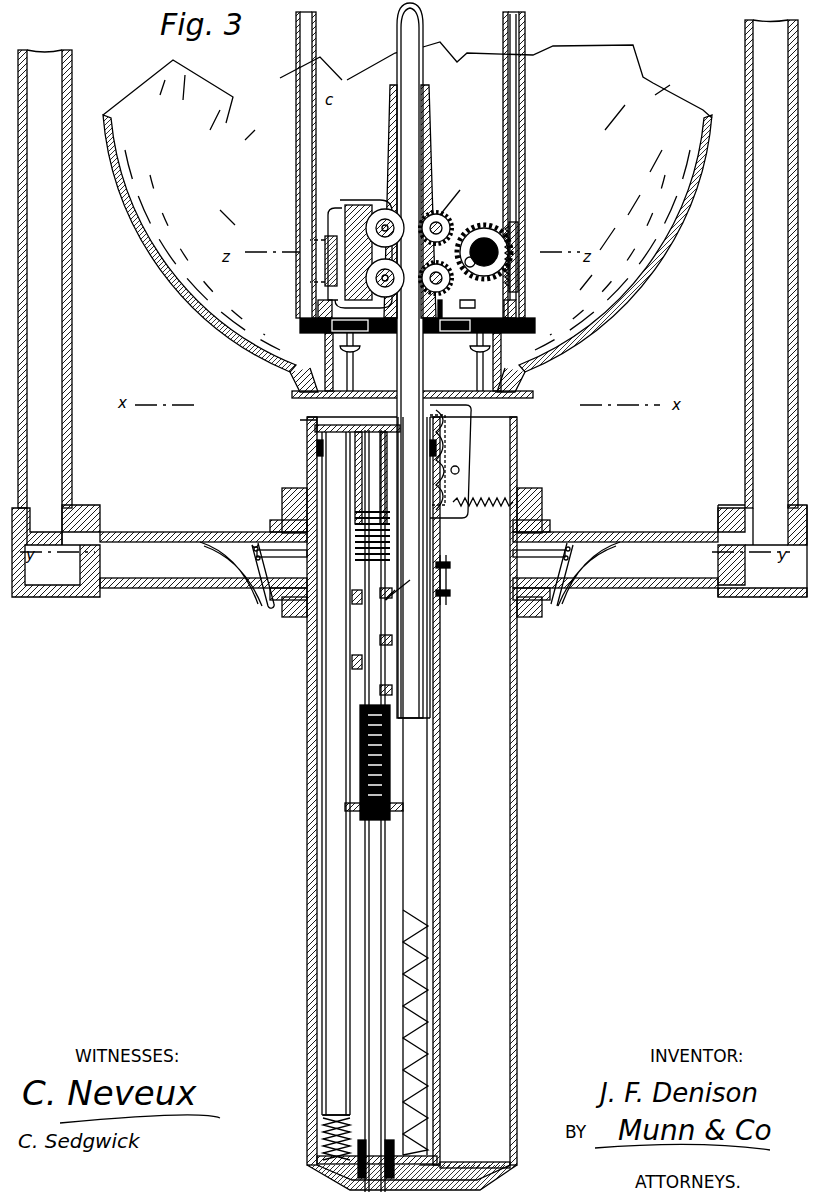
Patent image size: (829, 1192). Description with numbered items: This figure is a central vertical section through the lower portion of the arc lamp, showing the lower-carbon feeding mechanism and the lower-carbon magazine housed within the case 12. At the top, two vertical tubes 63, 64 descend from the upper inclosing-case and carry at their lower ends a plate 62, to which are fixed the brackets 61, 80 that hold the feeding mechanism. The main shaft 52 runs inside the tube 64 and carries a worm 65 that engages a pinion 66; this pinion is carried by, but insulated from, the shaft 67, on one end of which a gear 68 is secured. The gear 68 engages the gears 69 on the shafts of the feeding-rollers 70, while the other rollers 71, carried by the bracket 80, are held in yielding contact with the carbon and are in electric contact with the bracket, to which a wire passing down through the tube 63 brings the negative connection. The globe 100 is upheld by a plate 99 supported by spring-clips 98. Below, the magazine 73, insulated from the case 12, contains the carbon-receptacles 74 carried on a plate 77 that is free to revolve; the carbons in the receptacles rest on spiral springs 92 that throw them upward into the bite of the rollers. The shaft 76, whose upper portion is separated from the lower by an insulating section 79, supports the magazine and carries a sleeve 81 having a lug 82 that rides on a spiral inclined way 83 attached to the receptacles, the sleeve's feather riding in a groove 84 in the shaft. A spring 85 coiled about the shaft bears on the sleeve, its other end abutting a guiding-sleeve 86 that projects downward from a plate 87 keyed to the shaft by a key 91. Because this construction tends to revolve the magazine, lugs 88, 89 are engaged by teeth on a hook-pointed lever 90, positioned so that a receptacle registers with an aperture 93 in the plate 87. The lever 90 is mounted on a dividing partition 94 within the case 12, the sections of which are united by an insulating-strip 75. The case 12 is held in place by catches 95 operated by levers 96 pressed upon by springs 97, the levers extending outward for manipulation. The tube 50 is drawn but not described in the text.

The case 12 is at (412, 803).
The central tube 50 is at (402, 345).
The main shaft 52 is at (516, 113).
The bracket 61 is at (304, 314).
The plate 62 is at (524, 325).
The vertical tube 63 is at (308, 123).
The vertical tube 64 is at (525, 188).
The worm 65 is at (520, 240).
The pinion 66 is at (462, 297).
The shaft 67 is at (461, 263).
The gear 68 is at (486, 224).
The gear 69 is at (455, 196).
The feeding-roller 70 is at (445, 215).
The roller 71 is at (382, 251).
The magazine 73 is at (432, 776).
The carbon-receptacle 74 is at (346, 520).
The insulating-strip 75 is at (448, 580).
The shaft 76 is at (378, 1052).
The plate 77 is at (428, 1175).
The insulating section 79 is at (390, 752).
The bracket 80 is at (370, 200).
The sleeve 81 is at (353, 602).
The lug 82 is at (377, 606).
The spiral inclined way 83 is at (370, 676).
The groove 84 is at (380, 644).
The spring 85 is at (372, 522).
The guiding-sleeve 86 is at (371, 478).
The plate 87 is at (303, 418).
The lug 88 is at (304, 447).
The lug 89 is at (456, 506).
The hook-pointed lever 90 is at (452, 461).
The key 91 is at (356, 424).
The spiral spring 92 is at (416, 916).
The aperture 93 is at (403, 584).
The dividing partition 94 is at (440, 662).
The catch 95 is at (411, 548).
The lever 96 is at (266, 608).
The spring 97 is at (238, 565).
The spring-clip 98 is at (330, 368).
The plate 99 is at (412, 384).
The globe 100 is at (165, 248).